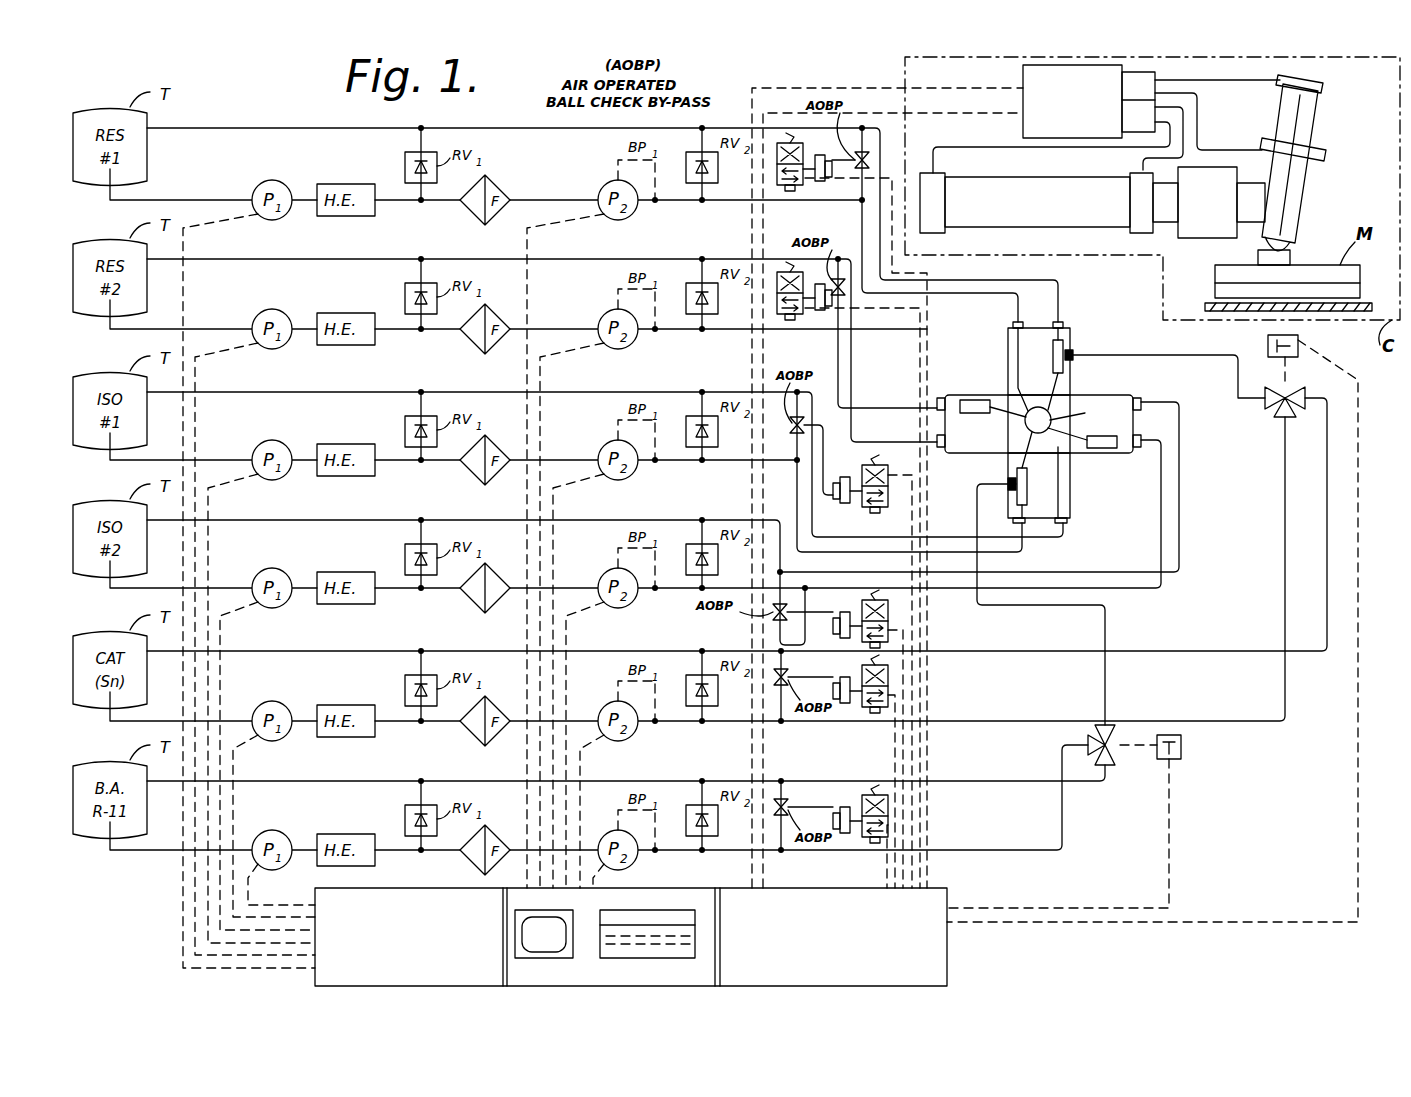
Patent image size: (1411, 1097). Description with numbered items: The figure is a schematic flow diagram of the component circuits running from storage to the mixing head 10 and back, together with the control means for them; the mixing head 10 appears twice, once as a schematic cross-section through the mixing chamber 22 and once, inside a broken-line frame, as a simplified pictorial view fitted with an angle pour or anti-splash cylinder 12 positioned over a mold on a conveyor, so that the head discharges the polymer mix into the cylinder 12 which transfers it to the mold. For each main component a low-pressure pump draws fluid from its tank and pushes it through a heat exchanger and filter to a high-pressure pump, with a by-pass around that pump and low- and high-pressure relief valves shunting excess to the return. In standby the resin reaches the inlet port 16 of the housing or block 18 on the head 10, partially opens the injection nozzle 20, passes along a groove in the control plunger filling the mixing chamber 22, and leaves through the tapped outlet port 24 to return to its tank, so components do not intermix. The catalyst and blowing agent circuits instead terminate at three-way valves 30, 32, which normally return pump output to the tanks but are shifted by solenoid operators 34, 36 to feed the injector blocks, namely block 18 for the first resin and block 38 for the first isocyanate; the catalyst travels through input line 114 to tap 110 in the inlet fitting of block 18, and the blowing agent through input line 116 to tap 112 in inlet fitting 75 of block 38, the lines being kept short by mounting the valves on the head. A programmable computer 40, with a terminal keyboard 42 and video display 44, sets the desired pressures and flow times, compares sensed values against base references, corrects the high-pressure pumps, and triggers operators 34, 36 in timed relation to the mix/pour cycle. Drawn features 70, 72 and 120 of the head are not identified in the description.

The mixing head 10 is at (1001, 255).
The angle pour or anti-splash cylinder 12 is at (1312, 114).
The inlet port 16 is at (1068, 328).
The housing or block 18 is at (1074, 346).
The injection nozzle 20 is at (1052, 365).
The mixing chamber 22 is at (1052, 420).
The tapped outlet port 24 is at (1020, 322).
The three-way valve 30 is at (1282, 414).
The three-way valve 32 is at (1114, 760).
The solenoid operator 34 is at (1300, 345).
The solenoid operator 36 is at (1183, 745).
The injector block 38 is at (1073, 488).
The programmable computer 40 is at (952, 964).
The terminal keyboard 42 is at (655, 958).
The video display 44 is at (545, 958).
The mixing head cross body 70 is at (960, 387).
The outlet ports 72 is at (1142, 423).
The inlet fitting 75 is at (1020, 523).
The tap 110 is at (1073, 356).
The tap 112 is at (1006, 482).
The input line 114 is at (1185, 368).
The input line 116 is at (1022, 610).
The metering orifices 120 is at (976, 400).